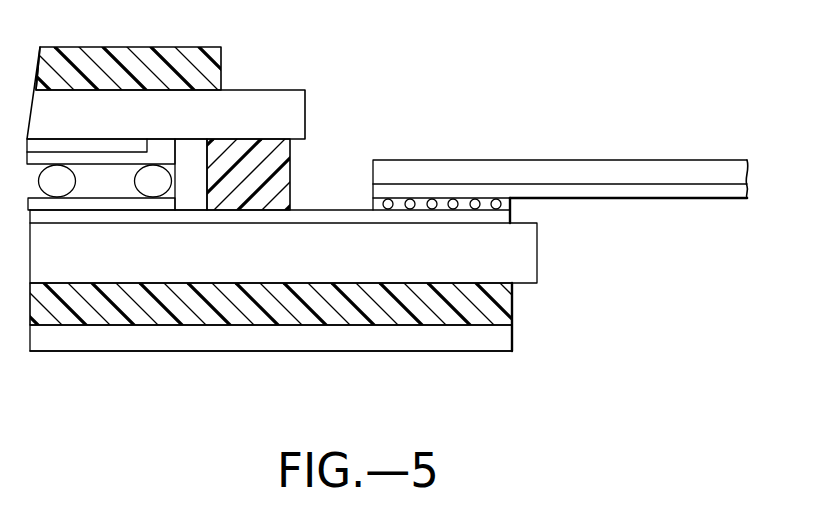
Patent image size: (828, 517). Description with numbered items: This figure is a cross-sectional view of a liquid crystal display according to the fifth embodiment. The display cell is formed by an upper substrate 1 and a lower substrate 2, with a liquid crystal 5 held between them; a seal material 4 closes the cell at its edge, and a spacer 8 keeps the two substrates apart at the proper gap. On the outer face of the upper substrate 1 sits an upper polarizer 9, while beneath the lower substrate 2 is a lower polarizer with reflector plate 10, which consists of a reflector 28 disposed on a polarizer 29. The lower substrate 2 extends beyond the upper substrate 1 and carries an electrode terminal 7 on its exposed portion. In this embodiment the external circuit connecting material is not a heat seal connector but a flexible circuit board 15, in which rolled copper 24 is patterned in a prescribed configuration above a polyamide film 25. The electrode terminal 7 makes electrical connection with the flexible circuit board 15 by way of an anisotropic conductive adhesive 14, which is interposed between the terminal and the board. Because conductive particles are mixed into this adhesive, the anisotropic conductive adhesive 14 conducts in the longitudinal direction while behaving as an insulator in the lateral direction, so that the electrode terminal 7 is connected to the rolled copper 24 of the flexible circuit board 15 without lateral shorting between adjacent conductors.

The upper substrate 1 is at (296, 115).
The lower substrate 2 is at (525, 257).
The seal material 4 is at (282, 171).
The liquid crystal 5 is at (193, 200).
The electrode terminal 7 is at (522, 190).
The spacer 8 is at (152, 190).
The upper polarizer 9 is at (137, 60).
The lower polarizer with reflector plate 10 is at (437, 352).
The anisotropic conductive adhesive 14 is at (467, 200).
The flexible circuit board (FPC) 15 is at (722, 160).
The rolled copper 24 is at (698, 190).
The polyamide film 25 is at (667, 168).
The reflector 28 is at (503, 335).
The polarizer 29 is at (507, 300).